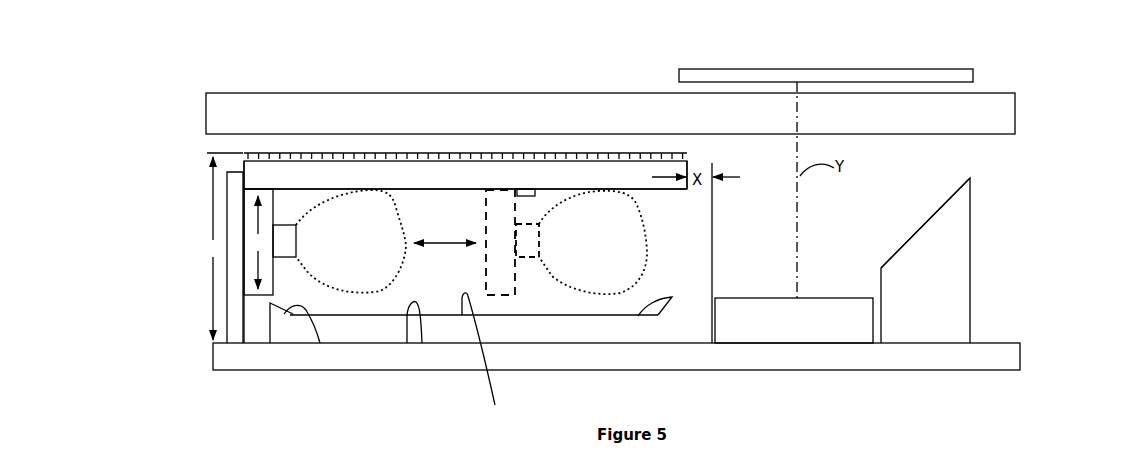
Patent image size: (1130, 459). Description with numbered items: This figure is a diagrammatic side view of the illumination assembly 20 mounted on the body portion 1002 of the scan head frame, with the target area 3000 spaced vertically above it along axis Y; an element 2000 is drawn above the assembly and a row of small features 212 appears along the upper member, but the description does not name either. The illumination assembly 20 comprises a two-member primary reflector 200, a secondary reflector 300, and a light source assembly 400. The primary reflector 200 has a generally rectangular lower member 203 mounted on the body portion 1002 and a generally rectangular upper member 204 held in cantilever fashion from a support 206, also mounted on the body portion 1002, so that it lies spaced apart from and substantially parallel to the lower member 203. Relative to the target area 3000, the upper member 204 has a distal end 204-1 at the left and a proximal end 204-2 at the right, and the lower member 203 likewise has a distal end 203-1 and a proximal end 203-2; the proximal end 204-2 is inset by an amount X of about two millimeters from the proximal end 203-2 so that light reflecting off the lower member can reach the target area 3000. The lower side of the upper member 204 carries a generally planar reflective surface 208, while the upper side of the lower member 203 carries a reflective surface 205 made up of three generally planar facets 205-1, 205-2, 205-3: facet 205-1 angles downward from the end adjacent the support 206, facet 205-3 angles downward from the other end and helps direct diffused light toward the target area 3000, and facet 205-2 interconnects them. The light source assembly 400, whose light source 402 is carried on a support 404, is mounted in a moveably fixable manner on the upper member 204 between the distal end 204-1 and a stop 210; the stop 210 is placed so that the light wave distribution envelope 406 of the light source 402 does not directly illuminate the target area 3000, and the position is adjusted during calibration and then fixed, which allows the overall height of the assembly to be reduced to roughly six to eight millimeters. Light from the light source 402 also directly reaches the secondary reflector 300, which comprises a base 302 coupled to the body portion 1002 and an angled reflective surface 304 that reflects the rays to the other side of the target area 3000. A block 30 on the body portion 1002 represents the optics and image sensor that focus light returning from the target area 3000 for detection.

The cover layer 2000 is at (277, 93).
The target area 3000 is at (772, 69).
The body portion 1002 is at (1020, 360).
The illumination assembly 20 is at (197, 156).
The primary reflector 200 is at (201, 231).
The support 206 is at (233, 343).
The lower member 203 is at (713, 292).
The distal end 203-1 is at (266, 327).
The proximal end 203-2 is at (713, 262).
The light extraction microstructures 212 is at (355, 153).
The upper member 204 is at (500, 148).
The distal end 204-1 is at (243, 172).
The proximal end 204-2 is at (684, 165).
The stop 210 is at (534, 188).
The reflective surface 208 is at (477, 190).
The support 404 is at (274, 287).
The light source 402 is at (280, 224).
The light wave distribution envelope 406 is at (406, 246).
The light source assembly 400 is at (529, 275).
The reflective surface 205 is at (492, 359).
The facet 205-1 is at (300, 310).
The facet 205-2 is at (417, 323).
The facet 205-3 is at (711, 262).
The block depicting optics and an image sensor 30 is at (829, 298).
The secondary reflector 300 is at (977, 258).
The base 302 is at (971, 287).
The angled reflective surface 304 is at (906, 243).